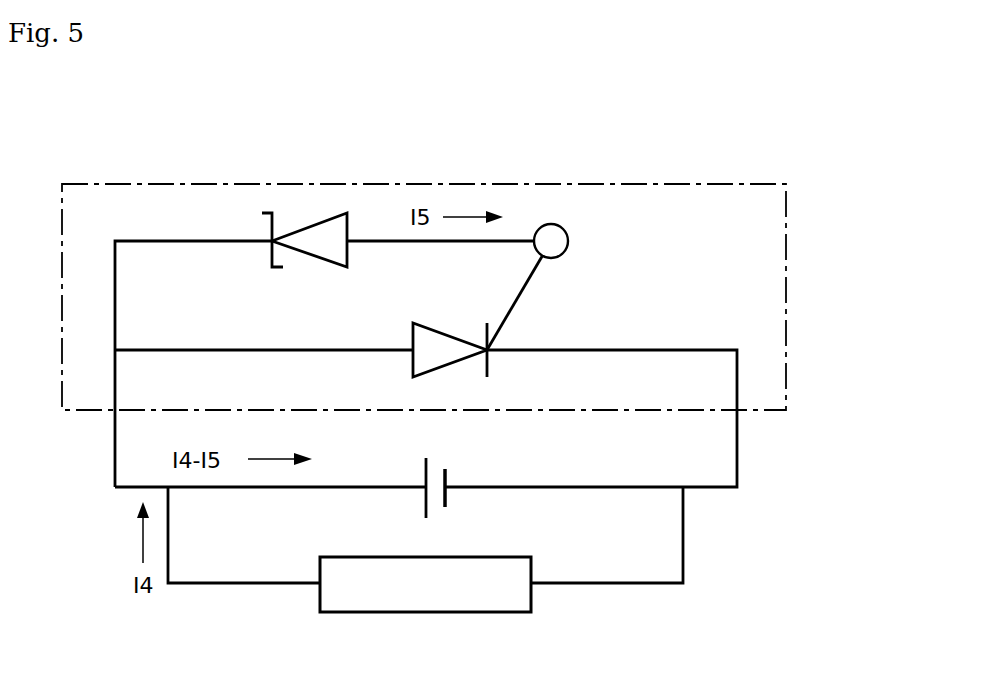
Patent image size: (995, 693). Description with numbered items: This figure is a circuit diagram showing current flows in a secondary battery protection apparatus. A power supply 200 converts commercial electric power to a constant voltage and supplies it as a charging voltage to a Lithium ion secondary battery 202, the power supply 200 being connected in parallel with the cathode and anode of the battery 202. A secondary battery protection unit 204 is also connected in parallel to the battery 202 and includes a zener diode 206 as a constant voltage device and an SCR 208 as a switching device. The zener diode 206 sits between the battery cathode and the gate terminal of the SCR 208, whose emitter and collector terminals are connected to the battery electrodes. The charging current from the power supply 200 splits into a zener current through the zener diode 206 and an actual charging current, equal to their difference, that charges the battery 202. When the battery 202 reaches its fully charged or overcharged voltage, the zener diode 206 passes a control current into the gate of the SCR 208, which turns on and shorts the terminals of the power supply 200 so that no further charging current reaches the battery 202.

The power supply 200 is at (492, 612).
The Lithium ion secondary battery 202 is at (423, 502).
The secondary battery protection unit 204 is at (786, 302).
The zener diode 206 is at (312, 224).
The SCR (silicon controlled rectifier) 208 is at (457, 335).